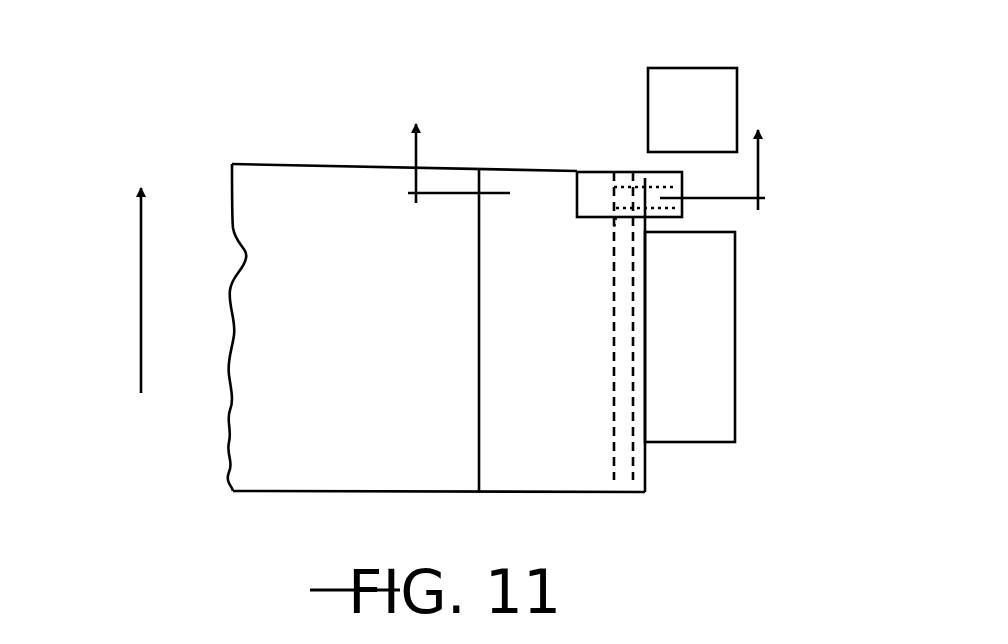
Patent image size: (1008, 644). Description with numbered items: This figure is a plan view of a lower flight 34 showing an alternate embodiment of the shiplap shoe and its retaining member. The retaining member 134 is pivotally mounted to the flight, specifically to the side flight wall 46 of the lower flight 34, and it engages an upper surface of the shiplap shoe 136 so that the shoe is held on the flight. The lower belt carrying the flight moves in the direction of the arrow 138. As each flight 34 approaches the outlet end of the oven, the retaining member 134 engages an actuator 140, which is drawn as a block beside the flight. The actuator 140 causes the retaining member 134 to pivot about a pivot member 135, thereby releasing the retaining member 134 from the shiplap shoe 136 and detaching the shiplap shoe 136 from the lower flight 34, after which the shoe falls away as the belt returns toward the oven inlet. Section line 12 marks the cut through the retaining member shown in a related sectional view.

The section line 12- 12 is at (583, 158).
The lower flight 34 is at (738, 298).
The side flight wall 46 is at (645, 455).
The retaining member 134 is at (592, 188).
The pivot member 135 is at (614, 240).
The shiplap shoe 136 is at (570, 447).
The arrow 138 is at (141, 303).
The actuator 140 is at (715, 100).